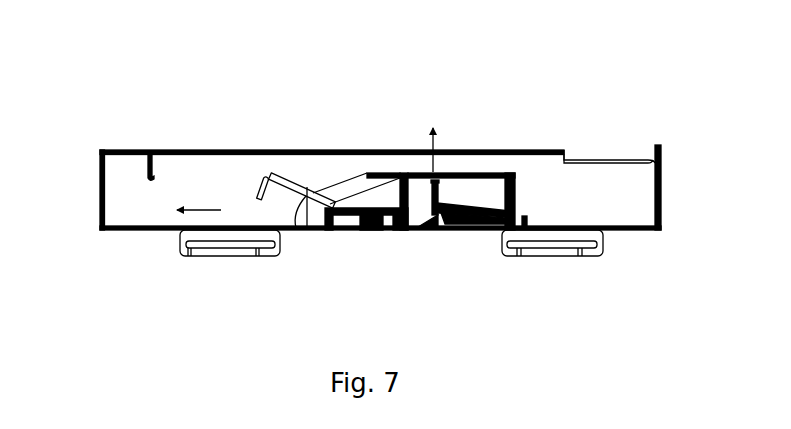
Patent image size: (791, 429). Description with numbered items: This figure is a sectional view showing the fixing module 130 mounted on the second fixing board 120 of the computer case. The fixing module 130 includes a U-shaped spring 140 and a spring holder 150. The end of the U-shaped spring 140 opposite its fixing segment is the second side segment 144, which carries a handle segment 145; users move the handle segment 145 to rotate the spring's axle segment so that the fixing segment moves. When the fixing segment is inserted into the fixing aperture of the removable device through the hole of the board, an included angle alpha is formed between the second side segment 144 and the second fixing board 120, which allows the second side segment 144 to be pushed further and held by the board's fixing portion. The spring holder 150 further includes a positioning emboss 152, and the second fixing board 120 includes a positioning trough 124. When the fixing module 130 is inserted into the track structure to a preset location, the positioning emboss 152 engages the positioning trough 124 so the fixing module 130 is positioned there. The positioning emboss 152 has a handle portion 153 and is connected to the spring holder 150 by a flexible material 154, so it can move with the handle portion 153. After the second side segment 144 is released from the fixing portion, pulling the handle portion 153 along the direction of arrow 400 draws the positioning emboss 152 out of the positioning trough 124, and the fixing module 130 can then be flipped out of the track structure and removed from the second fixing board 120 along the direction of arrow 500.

The second fixing board 120 is at (628, 231).
The positioning trough 124 is at (432, 232).
The fixing module 130 is at (553, 80).
The U-shaped spring 140 is at (314, 179).
The second side segment 144 is at (292, 174).
The handle segment 145 is at (256, 190).
The spring holder 150 is at (514, 171).
The positioning emboss 152 is at (443, 219).
The handle portion 153 is at (440, 183).
The flexible material 154 is at (478, 224).
The arrow 400 is at (434, 137).
The arrow 500 is at (177, 209).